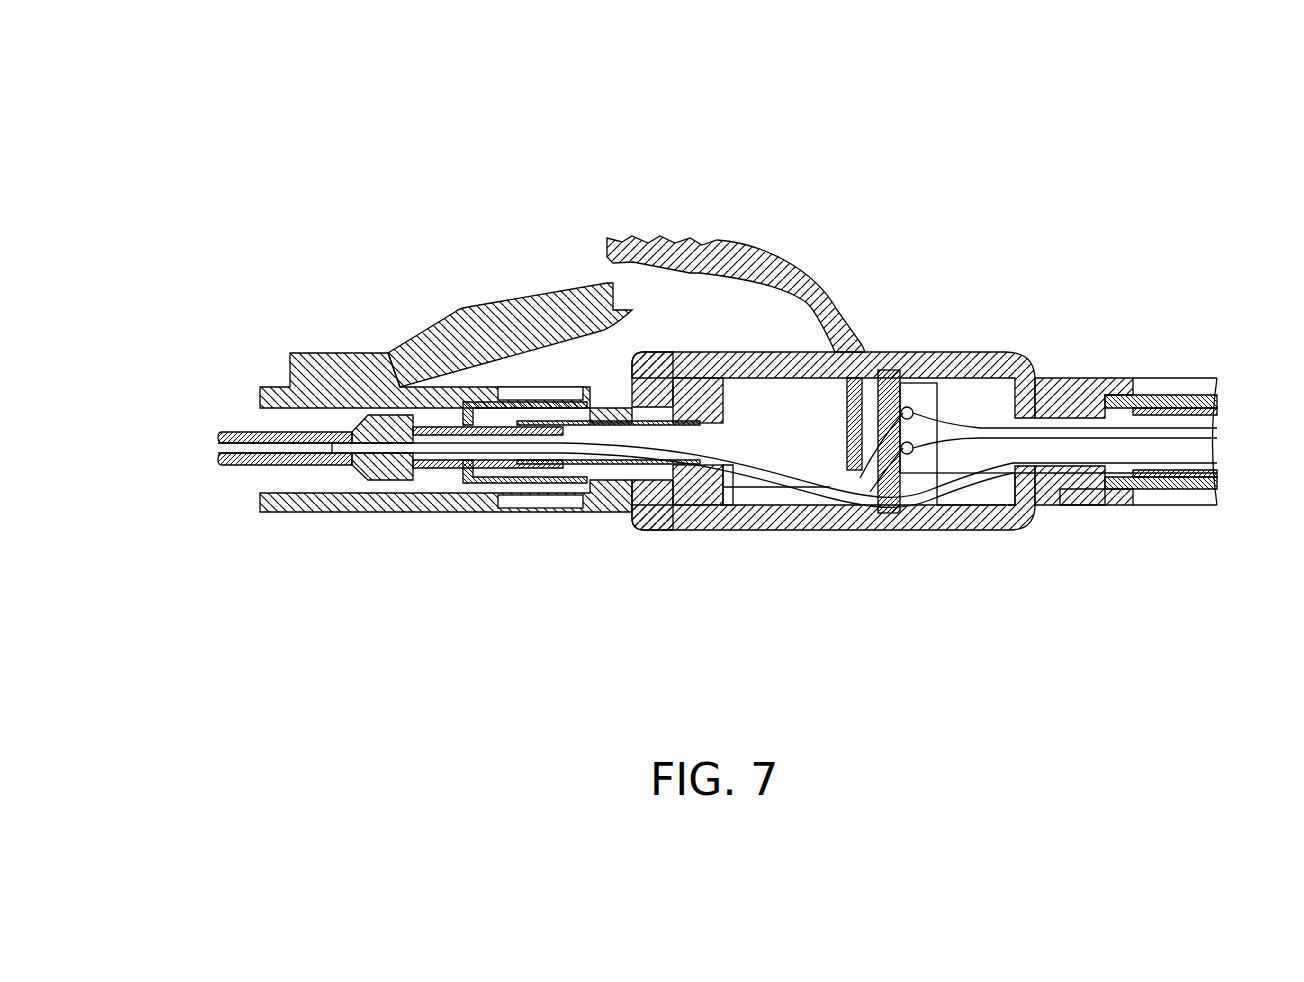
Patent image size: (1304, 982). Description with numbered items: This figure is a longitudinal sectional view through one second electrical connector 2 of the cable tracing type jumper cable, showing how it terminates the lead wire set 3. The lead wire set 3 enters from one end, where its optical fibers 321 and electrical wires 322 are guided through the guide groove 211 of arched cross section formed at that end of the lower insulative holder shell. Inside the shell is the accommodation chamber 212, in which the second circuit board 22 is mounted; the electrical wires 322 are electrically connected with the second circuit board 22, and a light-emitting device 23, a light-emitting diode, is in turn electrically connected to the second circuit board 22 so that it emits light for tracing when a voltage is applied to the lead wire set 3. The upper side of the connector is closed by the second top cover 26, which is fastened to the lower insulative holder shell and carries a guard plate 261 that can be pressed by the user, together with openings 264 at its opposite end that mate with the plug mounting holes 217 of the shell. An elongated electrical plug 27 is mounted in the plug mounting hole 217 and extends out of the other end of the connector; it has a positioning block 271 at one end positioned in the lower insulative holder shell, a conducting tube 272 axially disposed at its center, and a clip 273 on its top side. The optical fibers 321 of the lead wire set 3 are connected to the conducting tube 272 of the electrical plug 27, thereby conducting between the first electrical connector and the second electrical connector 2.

The second electrical connector 2 is at (425, 205).
The lead wire set 3 is at (1198, 373).
The second circuit board 22 is at (886, 385).
The light-emitting device 23 is at (936, 396).
The second top cover 26 is at (1012, 350).
The electrical plug 27 is at (402, 342).
The guide groove 211 is at (1082, 484).
The accommodation chamber 212 is at (972, 497).
The plug mounting hole 217 is at (700, 503).
The guard plate 261 is at (775, 270).
The opening 264 is at (700, 380).
The positioning block 271 is at (688, 508).
The conducting tube 272 is at (242, 430).
The clip 273 is at (532, 302).
The optical fiber 321 is at (610, 457).
The electrical wire 322 is at (1097, 440).